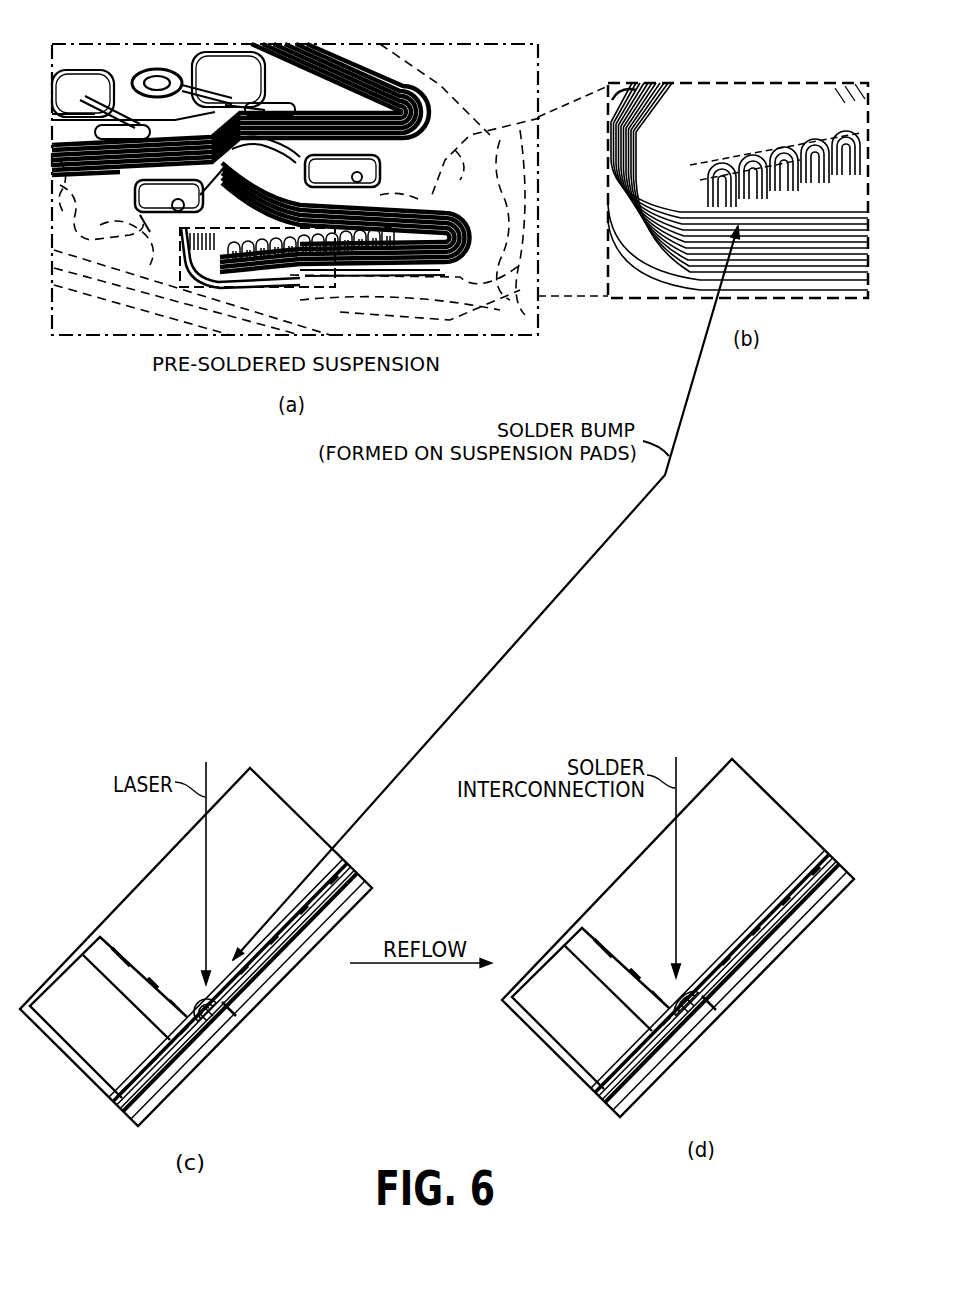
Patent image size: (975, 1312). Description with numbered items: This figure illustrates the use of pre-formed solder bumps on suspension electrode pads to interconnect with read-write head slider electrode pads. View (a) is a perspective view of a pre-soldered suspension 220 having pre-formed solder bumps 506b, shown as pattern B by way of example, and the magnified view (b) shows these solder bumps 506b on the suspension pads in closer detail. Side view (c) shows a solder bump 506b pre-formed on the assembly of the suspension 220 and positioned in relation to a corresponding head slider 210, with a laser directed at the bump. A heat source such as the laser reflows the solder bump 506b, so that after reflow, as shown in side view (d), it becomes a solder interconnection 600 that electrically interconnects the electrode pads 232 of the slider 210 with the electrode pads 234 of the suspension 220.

The suspension 220 is at (443, 74).
The solder bumps 506b is at (872, 140).
The head slider 210 is at (87, 1017).
The electrode pads 232 is at (180, 1003).
The electrode pads 234 is at (228, 1008).
The solder interconnection 600 is at (677, 990).